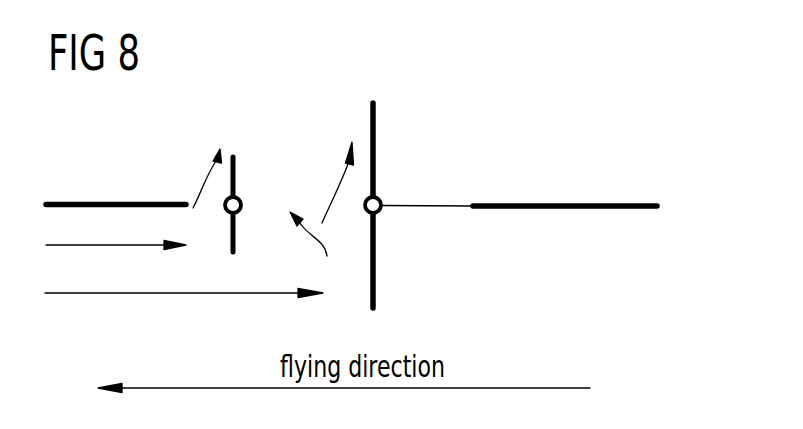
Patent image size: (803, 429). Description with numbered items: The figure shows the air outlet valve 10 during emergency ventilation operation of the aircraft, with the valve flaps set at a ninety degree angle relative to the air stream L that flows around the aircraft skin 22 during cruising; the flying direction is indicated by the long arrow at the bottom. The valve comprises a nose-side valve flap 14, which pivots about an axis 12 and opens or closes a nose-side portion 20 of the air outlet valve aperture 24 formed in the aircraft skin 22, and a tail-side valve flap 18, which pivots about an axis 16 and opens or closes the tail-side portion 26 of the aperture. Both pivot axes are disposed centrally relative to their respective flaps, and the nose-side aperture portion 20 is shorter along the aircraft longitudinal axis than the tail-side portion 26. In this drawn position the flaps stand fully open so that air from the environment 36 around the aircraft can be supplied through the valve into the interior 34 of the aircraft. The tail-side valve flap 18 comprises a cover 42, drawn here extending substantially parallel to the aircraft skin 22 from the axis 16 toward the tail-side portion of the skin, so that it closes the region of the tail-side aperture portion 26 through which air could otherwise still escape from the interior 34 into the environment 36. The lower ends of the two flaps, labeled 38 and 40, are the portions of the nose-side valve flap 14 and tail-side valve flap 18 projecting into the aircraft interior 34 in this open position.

The air outlet valve 10 is at (549, 109).
The axis 12 is at (243, 203).
The nose-side valve flap 14 is at (236, 163).
The axis 16 is at (387, 200).
The tail-side valve flap 18 is at (376, 113).
The nose-side portion of air outlet valve aperture 20 is at (250, 220).
The aircraft skin 22 is at (97, 203).
The air outlet valve aperture 24 is at (315, 252).
The tail-side portion of air outlet valve aperture 26 is at (350, 222).
The interior of the aircraft 34 is at (590, 182).
The environment 36 is at (590, 268).
The lower flap of first foil 38 is at (230, 237).
The lower flap of second foil 40 is at (376, 290).
The cover 42 is at (437, 204).
The air stream L is at (117, 294).